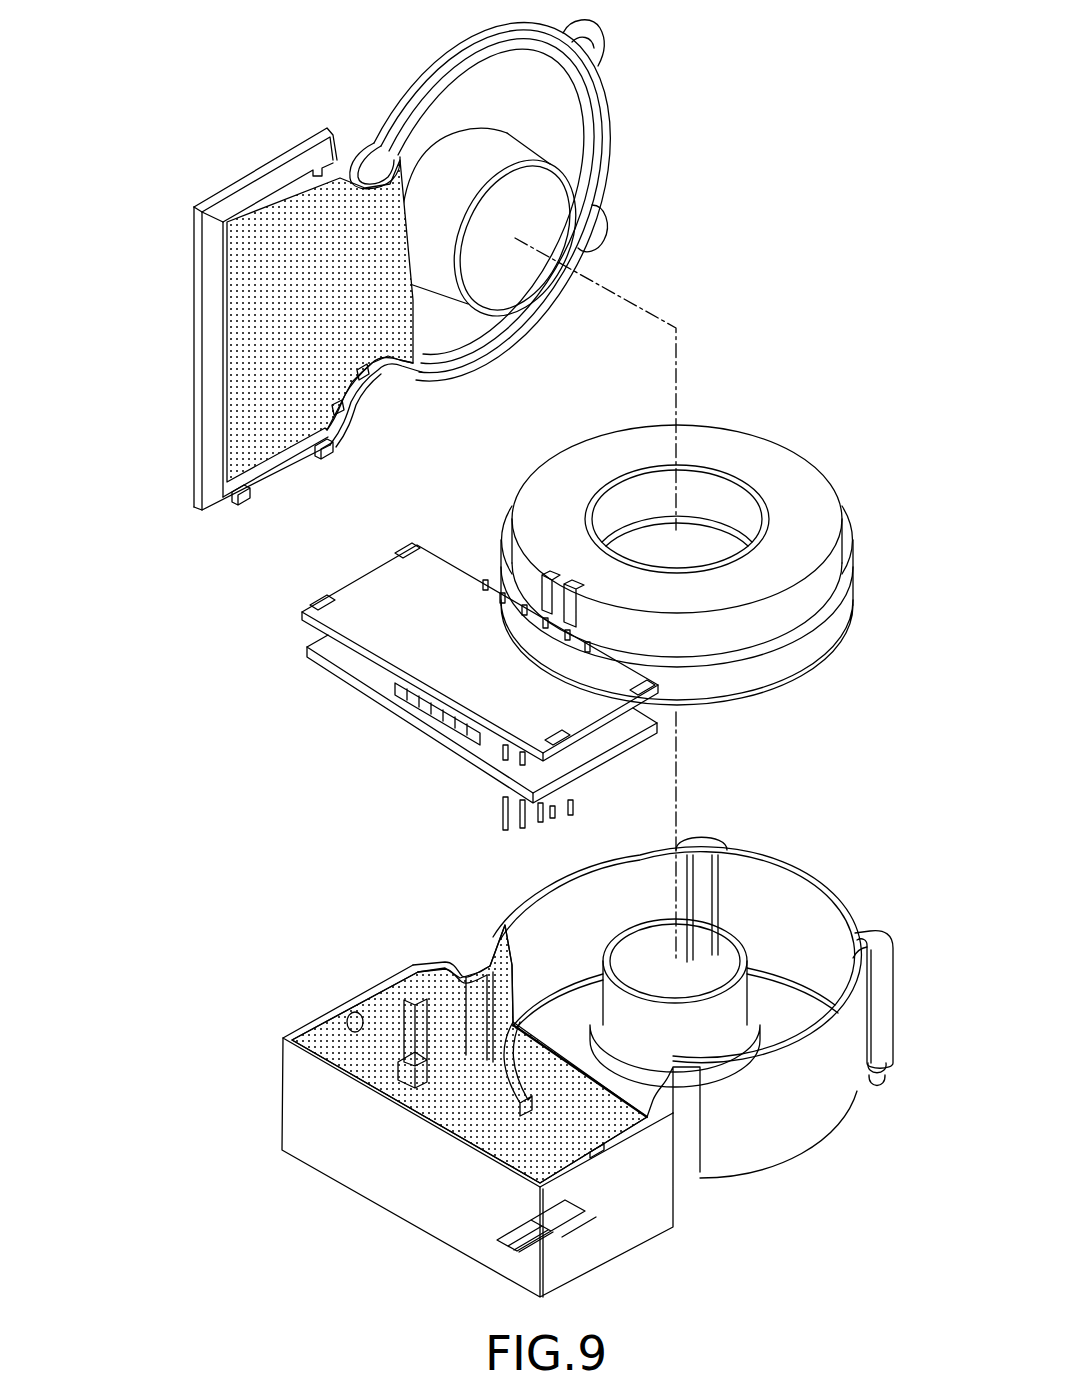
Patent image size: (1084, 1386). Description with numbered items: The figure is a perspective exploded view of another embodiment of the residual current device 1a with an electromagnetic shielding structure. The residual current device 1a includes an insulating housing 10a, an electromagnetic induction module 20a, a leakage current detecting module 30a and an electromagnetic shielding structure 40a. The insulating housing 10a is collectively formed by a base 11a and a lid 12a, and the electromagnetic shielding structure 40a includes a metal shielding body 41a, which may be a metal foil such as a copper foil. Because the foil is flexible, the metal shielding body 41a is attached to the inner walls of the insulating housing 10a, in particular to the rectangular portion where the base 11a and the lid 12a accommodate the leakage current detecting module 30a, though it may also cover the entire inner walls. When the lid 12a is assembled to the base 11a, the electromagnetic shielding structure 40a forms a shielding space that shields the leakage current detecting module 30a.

The residual current device 1a is at (731, 25).
The insulating housing 10a is at (799, 863).
The base 11a is at (310, 1105).
The lid 12a is at (194, 258).
The electromagnetic induction module 20a is at (751, 420).
The leakage current detecting module 30a is at (393, 736).
The electromagnetic shielding structure 40a is at (405, 172).
The metal shielding body 41a is at (290, 215).